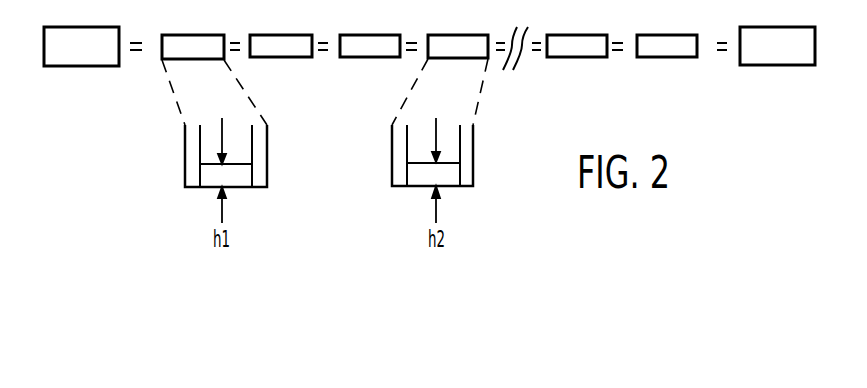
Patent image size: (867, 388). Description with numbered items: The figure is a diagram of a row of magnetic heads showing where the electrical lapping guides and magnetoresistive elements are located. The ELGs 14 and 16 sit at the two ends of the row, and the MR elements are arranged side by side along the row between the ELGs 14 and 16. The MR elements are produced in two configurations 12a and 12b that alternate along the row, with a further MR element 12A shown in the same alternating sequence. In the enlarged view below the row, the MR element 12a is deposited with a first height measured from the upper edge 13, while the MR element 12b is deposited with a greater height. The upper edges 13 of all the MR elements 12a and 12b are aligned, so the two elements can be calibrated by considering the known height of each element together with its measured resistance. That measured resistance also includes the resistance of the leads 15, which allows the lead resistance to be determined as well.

The electrical lapping guide 14 is at (103, 57).
The electrical lapping guide 16 is at (793, 50).
The MR element 12a is at (183, 49).
The MR element 12b is at (268, 50).
The MR element 12A is at (562, 47).
The upper edge 13 is at (375, 40).
The lead 15 is at (192, 172).